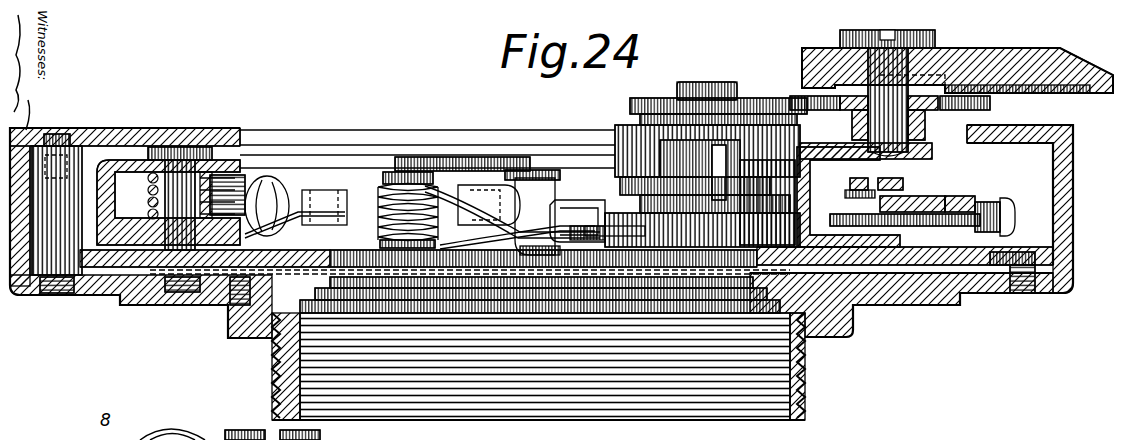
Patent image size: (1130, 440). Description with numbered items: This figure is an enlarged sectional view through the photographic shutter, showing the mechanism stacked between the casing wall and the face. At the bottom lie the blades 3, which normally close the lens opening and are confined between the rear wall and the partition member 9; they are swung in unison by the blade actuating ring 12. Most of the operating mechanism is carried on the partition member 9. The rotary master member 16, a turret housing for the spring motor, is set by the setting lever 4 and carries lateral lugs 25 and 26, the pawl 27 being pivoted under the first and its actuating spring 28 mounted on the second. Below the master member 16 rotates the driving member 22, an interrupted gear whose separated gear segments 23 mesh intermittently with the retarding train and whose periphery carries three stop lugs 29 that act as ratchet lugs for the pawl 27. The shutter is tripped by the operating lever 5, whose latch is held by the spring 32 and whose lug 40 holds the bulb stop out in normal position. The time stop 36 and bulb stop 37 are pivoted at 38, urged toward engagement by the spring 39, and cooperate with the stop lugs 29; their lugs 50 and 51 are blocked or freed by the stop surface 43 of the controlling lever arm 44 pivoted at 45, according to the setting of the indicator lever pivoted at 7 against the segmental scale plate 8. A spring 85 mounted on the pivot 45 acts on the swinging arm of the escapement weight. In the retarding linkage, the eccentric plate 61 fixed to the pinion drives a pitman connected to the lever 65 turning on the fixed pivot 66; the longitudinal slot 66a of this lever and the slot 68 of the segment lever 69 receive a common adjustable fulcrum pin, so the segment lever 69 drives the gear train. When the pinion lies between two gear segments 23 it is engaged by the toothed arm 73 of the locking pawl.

The blades 3 is at (566, 257).
The setting lever 4 is at (770, 98).
The operating lever 5 is at (295, 231).
The pivot 7 is at (900, 75).
The segmental scale plate 8 is at (1015, 50).
The partition member 9 is at (232, 282).
The blade actuating ring 12 is at (183, 293).
The master member 16 is at (622, 126).
The driving member 22 is at (715, 204).
The gear segments 23 is at (605, 226).
The lateral lug 25 is at (719, 166).
The lateral lug 26 is at (805, 170).
The pawl 27 is at (695, 186).
The actuating spring 28 is at (848, 104).
The stop lugs 29 is at (768, 202).
The spring 32 is at (292, 178).
The time stop 36 is at (505, 185).
The bulb stop 37 is at (570, 200).
The pivot 38 is at (546, 178).
The spring 39 is at (430, 186).
The lug 40 is at (345, 212).
The stop surface 43 is at (543, 256).
The controlling lever arm 44 is at (338, 162).
The pivot 45 is at (188, 146).
The lug 50 is at (393, 172).
The lug 51 is at (418, 157).
The eccentric plate 61 is at (856, 196).
The lever 65 is at (998, 206).
The fixed pivot 66 is at (1012, 216).
The longitudinal slot 66a is at (978, 188).
The slot 68 is at (880, 190).
The segment lever 69 is at (928, 188).
The toothed arm 73 is at (905, 220).
The spring 85 is at (168, 202).